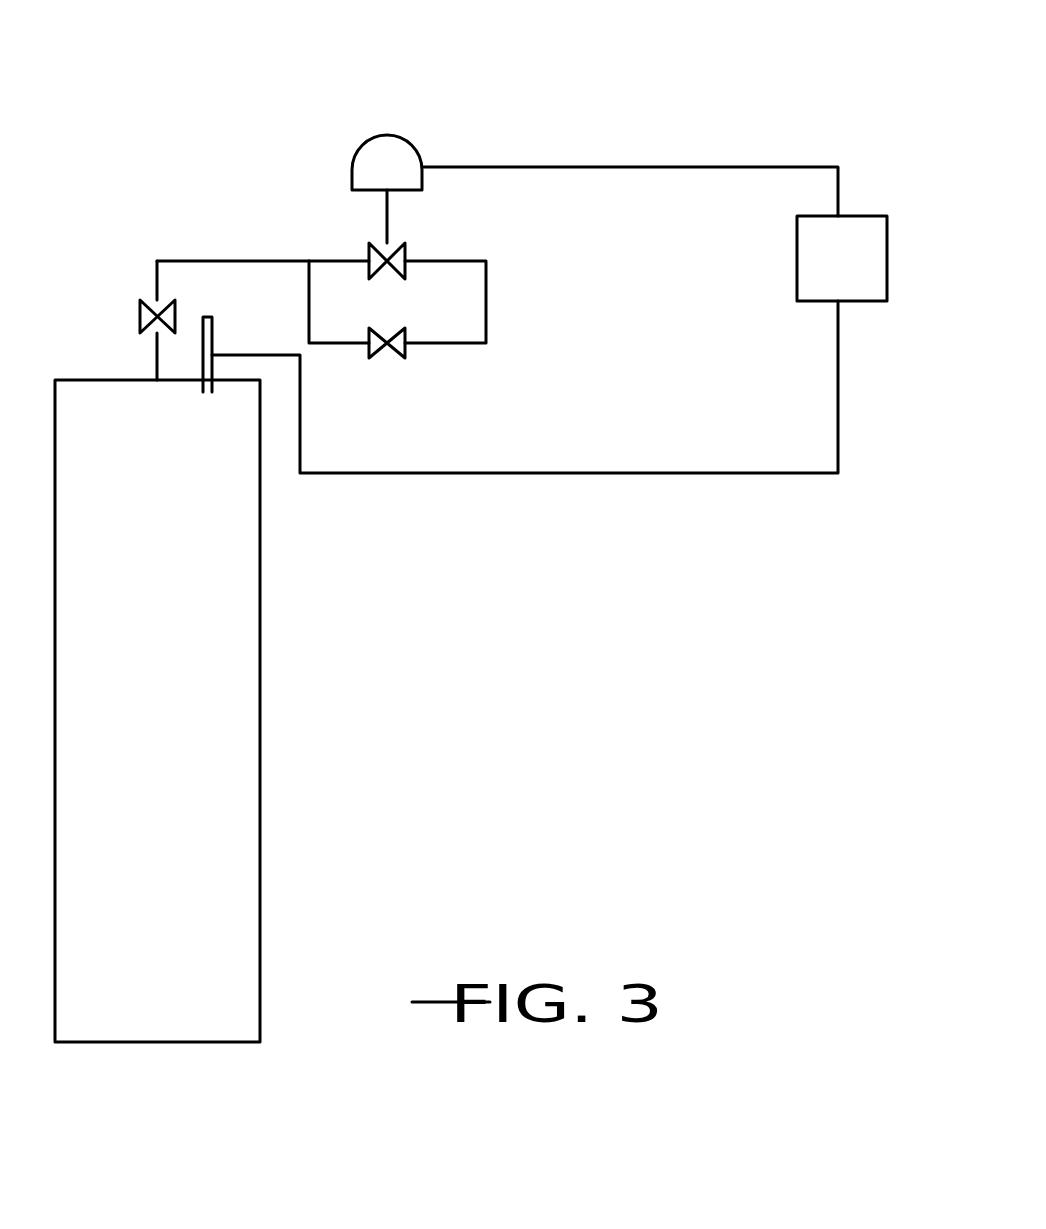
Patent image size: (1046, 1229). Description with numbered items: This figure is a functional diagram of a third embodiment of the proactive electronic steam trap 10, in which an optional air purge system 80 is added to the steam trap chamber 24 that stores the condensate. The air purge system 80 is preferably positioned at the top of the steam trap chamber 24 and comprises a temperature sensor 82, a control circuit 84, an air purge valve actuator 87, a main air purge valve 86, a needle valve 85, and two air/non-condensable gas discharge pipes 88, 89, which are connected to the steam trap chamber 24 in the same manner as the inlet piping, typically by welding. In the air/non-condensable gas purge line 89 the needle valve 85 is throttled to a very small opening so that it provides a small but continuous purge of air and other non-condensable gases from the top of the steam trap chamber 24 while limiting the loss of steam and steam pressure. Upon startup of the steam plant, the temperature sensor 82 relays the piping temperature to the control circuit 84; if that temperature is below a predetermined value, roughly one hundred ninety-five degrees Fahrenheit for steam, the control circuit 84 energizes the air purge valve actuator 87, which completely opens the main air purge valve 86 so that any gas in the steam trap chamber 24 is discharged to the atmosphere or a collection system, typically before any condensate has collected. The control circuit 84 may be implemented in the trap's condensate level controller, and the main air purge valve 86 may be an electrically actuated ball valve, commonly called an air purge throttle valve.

The proactive electronic steam trap 10 is at (553, 683).
The steam trap chamber 24 is at (270, 667).
The air purge system 80 is at (923, 470).
The temperature sensor 82 is at (213, 333).
The control circuit 84 is at (810, 302).
The needle valve 85 is at (407, 353).
The main air purge valve 86 is at (367, 252).
The air purge valve actuator 87 is at (410, 140).
The air/non-condensable gas discharge pipe 88 is at (193, 259).
The air/non-condensable gas discharge pipe 89 is at (497, 285).